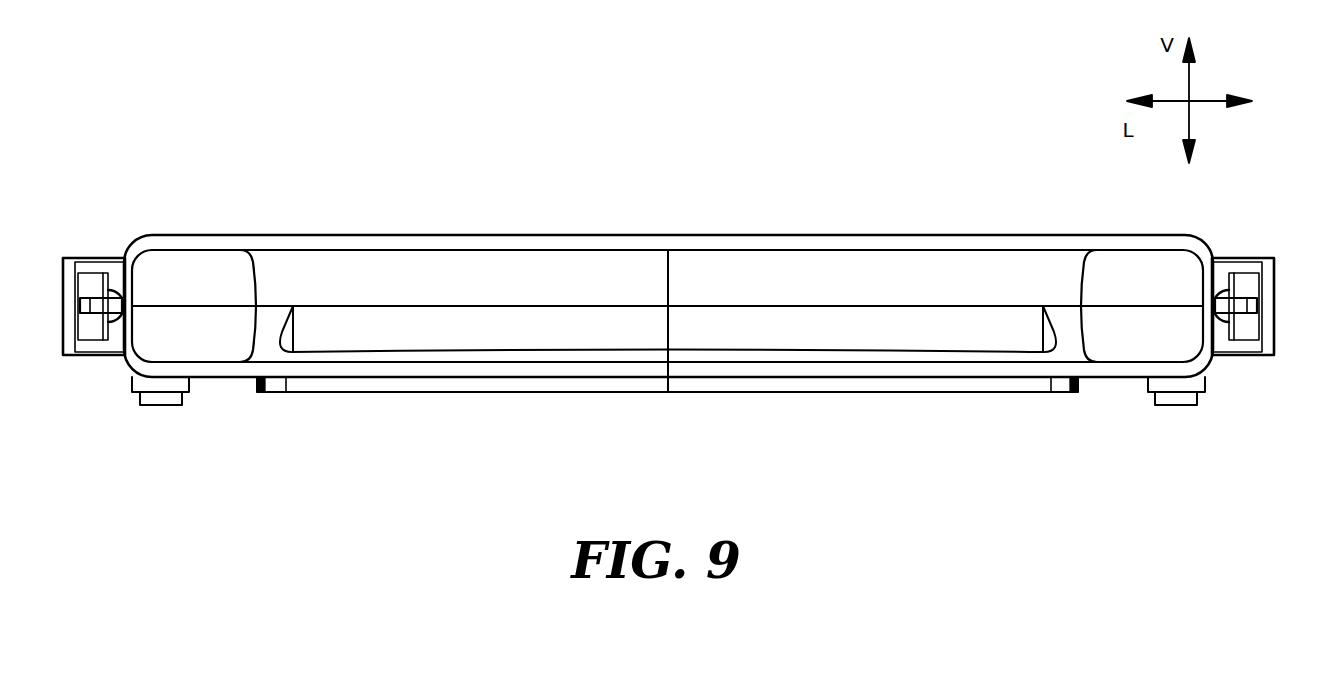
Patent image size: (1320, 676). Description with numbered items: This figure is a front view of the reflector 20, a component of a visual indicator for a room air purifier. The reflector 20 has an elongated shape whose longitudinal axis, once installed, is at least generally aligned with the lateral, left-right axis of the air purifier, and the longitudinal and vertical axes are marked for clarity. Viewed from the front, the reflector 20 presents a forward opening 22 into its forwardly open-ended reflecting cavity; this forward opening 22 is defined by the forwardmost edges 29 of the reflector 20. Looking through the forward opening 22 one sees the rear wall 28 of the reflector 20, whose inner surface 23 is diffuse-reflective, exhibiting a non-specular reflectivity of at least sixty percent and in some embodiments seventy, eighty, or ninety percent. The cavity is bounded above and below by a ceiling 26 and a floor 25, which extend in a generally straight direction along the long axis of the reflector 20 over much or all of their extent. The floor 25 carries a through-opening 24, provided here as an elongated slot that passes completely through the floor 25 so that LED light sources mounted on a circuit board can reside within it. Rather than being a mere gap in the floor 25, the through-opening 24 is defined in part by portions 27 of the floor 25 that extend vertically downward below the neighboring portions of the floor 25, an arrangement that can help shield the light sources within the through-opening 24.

The reflector 20 is at (203, 82).
The forward opening 22 is at (1121, 316).
The inner surface 23 is at (857, 280).
The through-opening 24 is at (551, 386).
The floor 25 is at (226, 366).
The ceiling 26 is at (197, 243).
The portions of floor 27 is at (744, 382).
The rear wall 28 is at (612, 279).
The forwardmost edges 29 is at (494, 242).